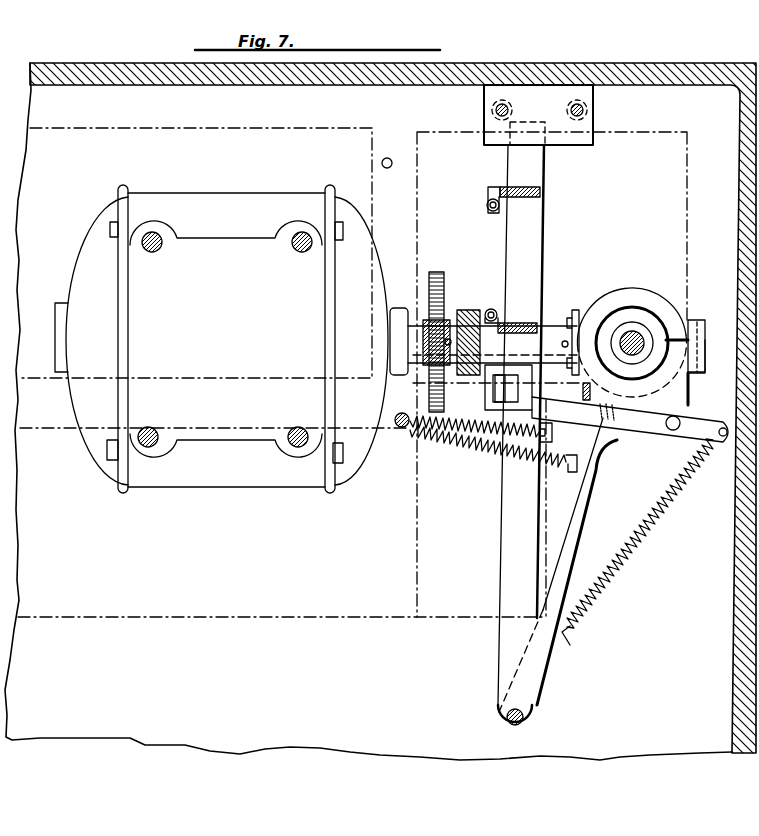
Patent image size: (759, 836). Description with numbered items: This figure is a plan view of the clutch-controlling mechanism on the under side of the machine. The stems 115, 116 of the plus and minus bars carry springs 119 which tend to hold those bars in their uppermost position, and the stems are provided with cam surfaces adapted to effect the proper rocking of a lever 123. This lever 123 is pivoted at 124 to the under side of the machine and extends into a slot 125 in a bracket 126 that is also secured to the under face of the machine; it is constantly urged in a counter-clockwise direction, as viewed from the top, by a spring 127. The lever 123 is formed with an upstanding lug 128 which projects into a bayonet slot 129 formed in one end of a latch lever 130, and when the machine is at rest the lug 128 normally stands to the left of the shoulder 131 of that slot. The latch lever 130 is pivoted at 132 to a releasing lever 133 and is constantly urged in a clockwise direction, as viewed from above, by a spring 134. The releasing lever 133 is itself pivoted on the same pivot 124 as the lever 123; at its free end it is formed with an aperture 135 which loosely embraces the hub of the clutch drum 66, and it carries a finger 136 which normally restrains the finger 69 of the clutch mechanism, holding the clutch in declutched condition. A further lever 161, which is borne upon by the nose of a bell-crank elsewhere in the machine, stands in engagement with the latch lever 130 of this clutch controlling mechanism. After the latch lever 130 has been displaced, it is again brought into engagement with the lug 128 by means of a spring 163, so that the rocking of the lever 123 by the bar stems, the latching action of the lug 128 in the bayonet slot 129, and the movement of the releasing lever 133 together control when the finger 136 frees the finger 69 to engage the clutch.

The clutch drum 66 is at (629, 297).
The finger of the clutch mechanism 69 is at (700, 320).
The stem of the plus bar 115 is at (516, 322).
The stem of the minus bar 116 is at (541, 193).
The spring 119 is at (487, 205).
The lever 123 is at (507, 532).
The pivot 124 is at (524, 716).
The slot 125 is at (578, 146).
The bracket 126 is at (539, 106).
The spring 127 is at (484, 432).
The upstanding lug 128 is at (494, 396).
The bayonet slot 129 is at (503, 375).
The latch lever 130 is at (633, 423).
The shoulder 131 is at (509, 399).
The pivot 132 is at (680, 418).
The releasing lever 133 is at (582, 512).
The spring 134 is at (487, 447).
The aperture 135 is at (611, 312).
The finger 136 is at (704, 352).
The lever 161 is at (591, 378).
The spring 163 is at (672, 490).